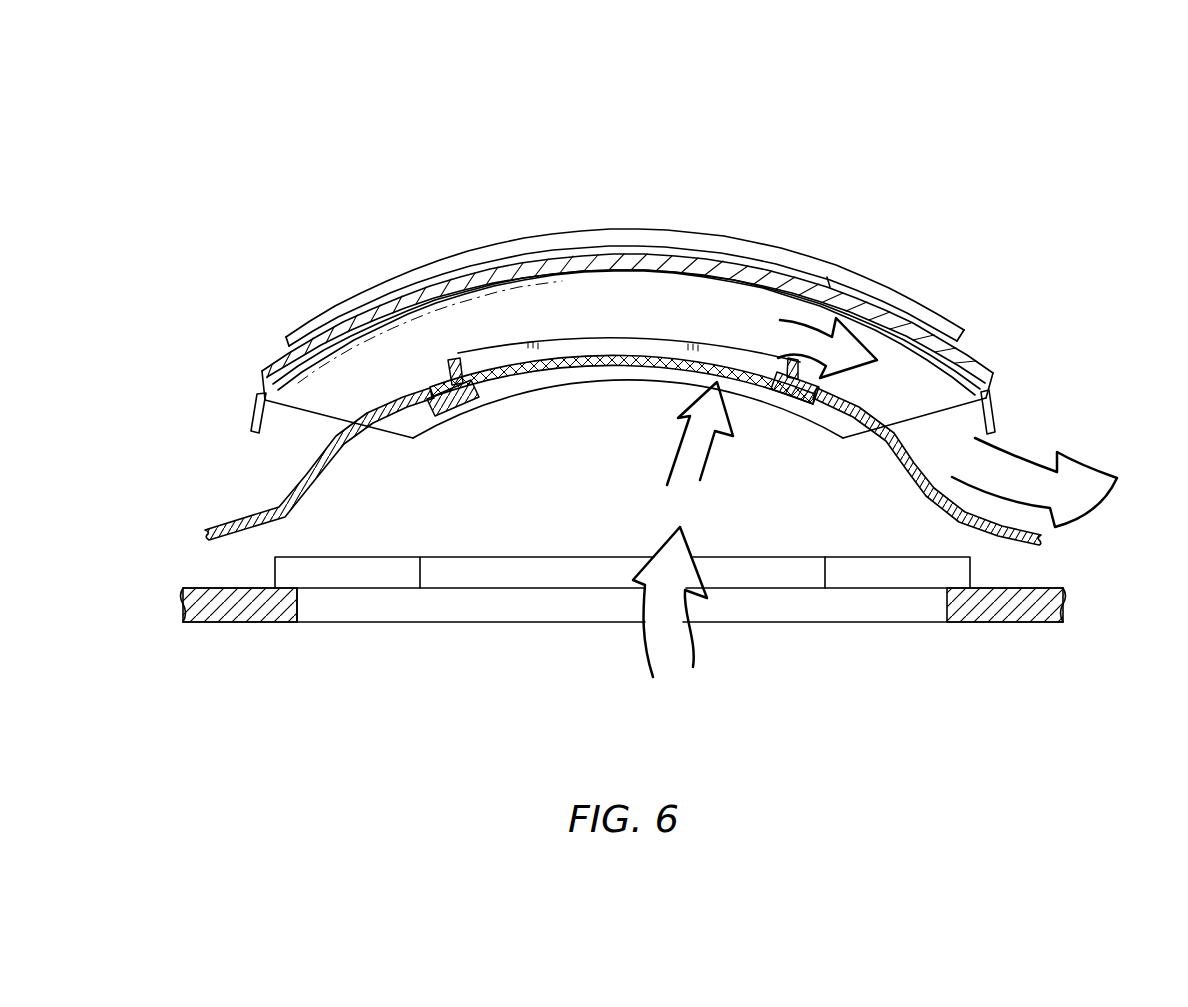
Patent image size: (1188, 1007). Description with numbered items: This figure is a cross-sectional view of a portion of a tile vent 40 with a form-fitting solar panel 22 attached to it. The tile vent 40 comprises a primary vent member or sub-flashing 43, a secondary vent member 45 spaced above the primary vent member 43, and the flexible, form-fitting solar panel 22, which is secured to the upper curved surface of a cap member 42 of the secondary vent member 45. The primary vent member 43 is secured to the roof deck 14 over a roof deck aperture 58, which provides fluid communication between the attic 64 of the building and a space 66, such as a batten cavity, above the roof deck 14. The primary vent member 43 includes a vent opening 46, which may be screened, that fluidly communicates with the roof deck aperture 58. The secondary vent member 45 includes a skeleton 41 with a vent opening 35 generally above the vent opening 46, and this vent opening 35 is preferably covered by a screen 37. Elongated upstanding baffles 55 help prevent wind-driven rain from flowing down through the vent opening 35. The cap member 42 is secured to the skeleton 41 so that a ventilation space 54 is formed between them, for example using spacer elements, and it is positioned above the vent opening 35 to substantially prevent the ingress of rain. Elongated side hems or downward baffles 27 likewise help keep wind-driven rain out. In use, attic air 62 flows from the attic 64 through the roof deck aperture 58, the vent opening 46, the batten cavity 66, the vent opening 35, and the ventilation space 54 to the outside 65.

The roof deck 14 is at (985, 613).
The form-fitting solar panel 22 is at (597, 237).
The side hems or downward baffles 27 is at (248, 417).
The vent opening 35 is at (553, 432).
The screen 37 is at (705, 355).
The tile vent 40 is at (813, 176).
The skeleton 41 is at (313, 488).
The cap member 42 is at (827, 277).
The primary vent member 43 is at (965, 575).
The secondary vent member 45 is at (974, 358).
The vent opening 46 is at (777, 563).
The ventilation space 54 is at (623, 324).
The upstanding baffles 55 is at (490, 393).
The roof deck aperture 58 is at (347, 618).
The attic air 62 is at (788, 333).
The attic 64 is at (489, 667).
The outside 65 is at (230, 463).
The space or batten cavity 66 is at (509, 531).